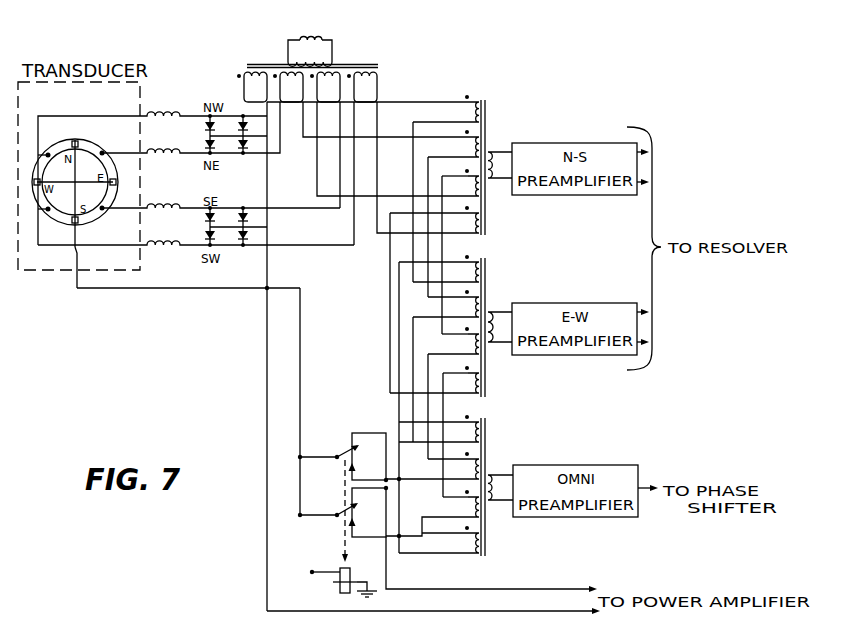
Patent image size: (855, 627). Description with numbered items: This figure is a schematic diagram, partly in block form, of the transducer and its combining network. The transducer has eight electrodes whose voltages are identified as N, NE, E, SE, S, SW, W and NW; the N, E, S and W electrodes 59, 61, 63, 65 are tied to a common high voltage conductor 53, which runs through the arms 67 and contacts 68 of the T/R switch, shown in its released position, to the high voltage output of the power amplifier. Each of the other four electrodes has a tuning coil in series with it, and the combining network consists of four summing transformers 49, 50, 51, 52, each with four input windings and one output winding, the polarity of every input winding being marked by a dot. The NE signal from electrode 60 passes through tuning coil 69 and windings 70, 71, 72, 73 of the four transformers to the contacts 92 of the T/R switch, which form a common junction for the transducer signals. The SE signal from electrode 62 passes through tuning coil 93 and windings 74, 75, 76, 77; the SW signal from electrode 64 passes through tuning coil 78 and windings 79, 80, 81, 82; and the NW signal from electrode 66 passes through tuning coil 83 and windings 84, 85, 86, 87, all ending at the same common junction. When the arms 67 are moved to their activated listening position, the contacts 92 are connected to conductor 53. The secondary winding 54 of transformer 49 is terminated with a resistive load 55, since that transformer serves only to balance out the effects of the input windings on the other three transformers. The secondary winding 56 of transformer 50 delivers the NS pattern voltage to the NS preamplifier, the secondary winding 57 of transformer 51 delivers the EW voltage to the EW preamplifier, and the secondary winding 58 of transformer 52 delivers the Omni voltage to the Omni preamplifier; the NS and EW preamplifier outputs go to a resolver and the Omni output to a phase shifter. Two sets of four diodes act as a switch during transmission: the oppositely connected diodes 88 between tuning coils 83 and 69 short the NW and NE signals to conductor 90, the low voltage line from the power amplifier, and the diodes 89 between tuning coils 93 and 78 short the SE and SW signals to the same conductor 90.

The summing transformer 49 is at (378, 66).
The summing transformer 50 is at (488, 108).
The summing transformer 51 is at (488, 264).
The summing transformer 52 is at (489, 422).
The common high voltage conductor 53 is at (191, 290).
The secondary winding 54 is at (288, 58).
The resistive load 55 is at (315, 38).
The secondary winding 56 is at (491, 150).
The secondary winding 57 is at (491, 312).
The secondary winding 58 is at (491, 472).
The electrode 59 is at (79, 134).
The electrode 60 is at (104, 153).
The electrode 61 is at (117, 182).
The electrode 62 is at (104, 211).
The electrode 63 is at (79, 223).
The electrode 64 is at (49, 212).
The electrode 65 is at (36, 187).
The electrode 66 is at (46, 155).
The arms 67 is at (343, 528).
The contacts 68 is at (352, 451).
The tuning coil 69 is at (172, 151).
The winding 70 is at (288, 87).
The winding 71 is at (468, 147).
The winding 72 is at (468, 307).
The winding 73 is at (468, 469).
The winding 74 is at (325, 87).
The winding 75 is at (468, 186).
The winding 76 is at (468, 344).
The winding 77 is at (468, 507).
The tuning coil 78 is at (174, 243).
The winding 79 is at (362, 87).
The winding 80 is at (468, 223).
The winding 81 is at (468, 383).
The winding 82 is at (468, 543).
The tuning coil 83 is at (170, 113).
The winding 84 is at (252, 87).
The winding 85 is at (468, 112).
The winding 86 is at (468, 272).
The winding 87 is at (468, 432).
The diodes 88 is at (233, 149).
The diodes 89 is at (232, 212).
The conductor 90 is at (267, 340).
The contacts 92 is at (355, 468).
The tuning coil 93 is at (176, 206).